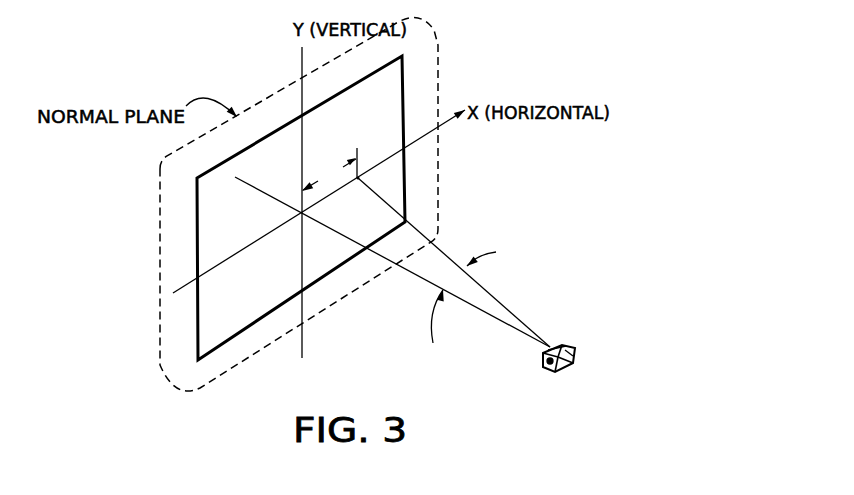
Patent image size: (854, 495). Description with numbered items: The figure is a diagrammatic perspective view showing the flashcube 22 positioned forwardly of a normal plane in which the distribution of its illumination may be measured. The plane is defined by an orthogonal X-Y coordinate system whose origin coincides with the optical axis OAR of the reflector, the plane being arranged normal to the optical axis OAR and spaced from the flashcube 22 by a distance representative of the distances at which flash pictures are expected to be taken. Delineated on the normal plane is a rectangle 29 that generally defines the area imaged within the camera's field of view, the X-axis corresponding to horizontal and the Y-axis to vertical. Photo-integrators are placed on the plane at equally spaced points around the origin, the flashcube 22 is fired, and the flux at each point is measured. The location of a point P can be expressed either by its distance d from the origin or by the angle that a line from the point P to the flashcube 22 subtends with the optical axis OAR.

The flashcube 22 is at (564, 373).
The rectangle 29 is at (388, 57).
The point P is at (358, 178).
The distance d is at (329, 169).
The optical axis of the reflector OAR is at (507, 324).